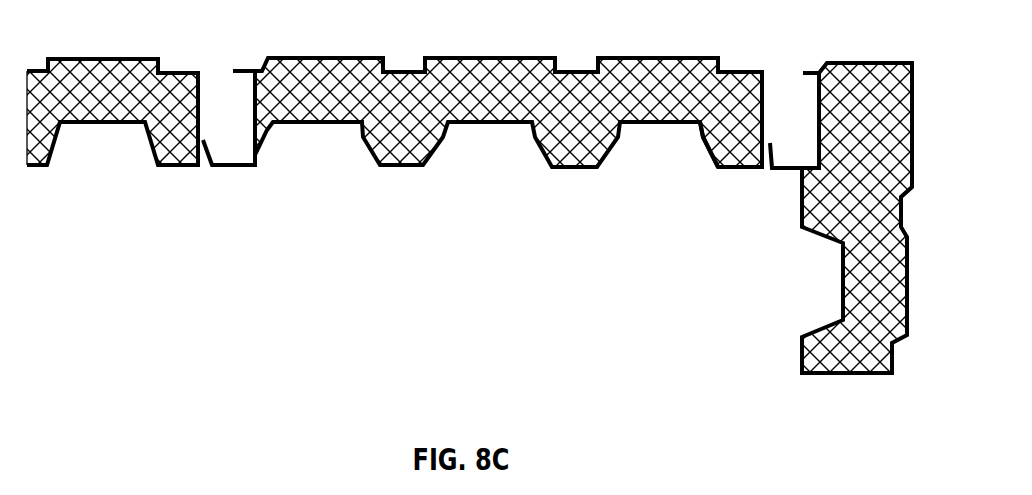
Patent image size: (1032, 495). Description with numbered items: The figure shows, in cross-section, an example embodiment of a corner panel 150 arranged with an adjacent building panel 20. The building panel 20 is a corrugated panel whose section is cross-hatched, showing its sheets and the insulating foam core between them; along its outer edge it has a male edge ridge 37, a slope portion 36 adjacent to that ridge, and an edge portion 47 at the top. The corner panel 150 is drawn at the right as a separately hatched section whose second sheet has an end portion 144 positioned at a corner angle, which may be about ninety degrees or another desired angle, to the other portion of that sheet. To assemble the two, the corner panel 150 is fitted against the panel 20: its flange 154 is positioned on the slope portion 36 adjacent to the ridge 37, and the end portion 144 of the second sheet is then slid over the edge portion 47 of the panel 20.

The building panel 20 is at (485, 148).
The slope portion 36 is at (715, 152).
The male edge ridge 37 is at (740, 172).
The edge portion 47 is at (742, 72).
The end portion of the second sheet 144 is at (872, 63).
The corner panel 150 is at (835, 275).
The flange 154 is at (776, 149).